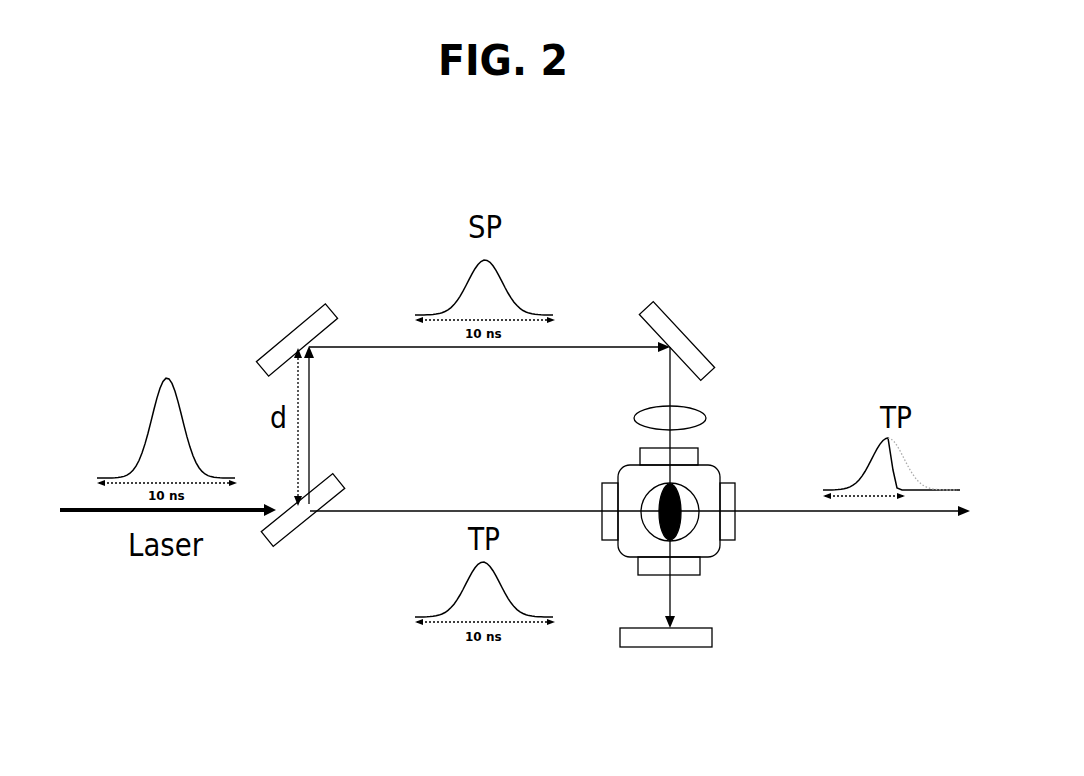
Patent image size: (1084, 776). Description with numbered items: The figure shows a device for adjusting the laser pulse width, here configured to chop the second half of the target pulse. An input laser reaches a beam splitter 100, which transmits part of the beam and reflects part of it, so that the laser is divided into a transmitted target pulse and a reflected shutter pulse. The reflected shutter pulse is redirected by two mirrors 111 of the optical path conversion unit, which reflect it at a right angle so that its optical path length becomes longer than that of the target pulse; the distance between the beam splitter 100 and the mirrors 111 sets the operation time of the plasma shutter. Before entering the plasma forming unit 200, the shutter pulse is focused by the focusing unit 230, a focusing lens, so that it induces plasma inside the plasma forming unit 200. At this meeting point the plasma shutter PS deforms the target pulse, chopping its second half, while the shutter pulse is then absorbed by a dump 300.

The beam splitter 100 is at (290, 538).
The mirror 111 is at (326, 302).
The focusing unit 230 is at (707, 418).
The plasma forming unit 200 is at (705, 544).
The plasma shutter PS is at (683, 500).
The dump 300 is at (697, 648).